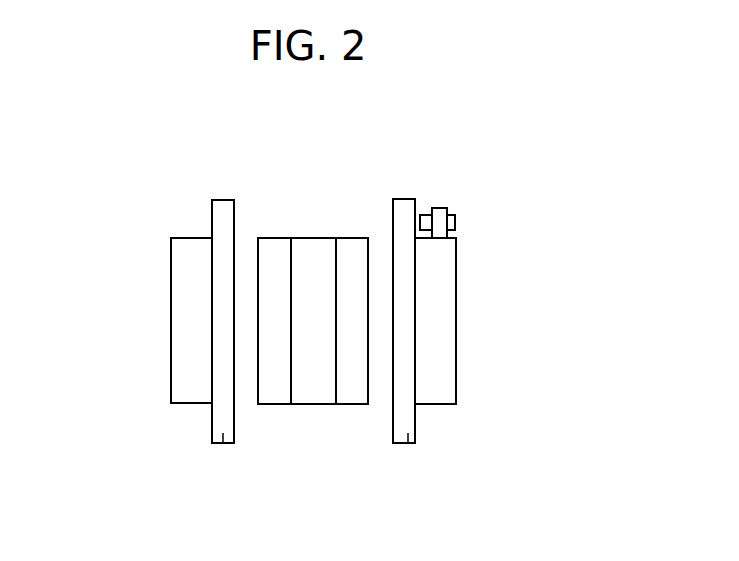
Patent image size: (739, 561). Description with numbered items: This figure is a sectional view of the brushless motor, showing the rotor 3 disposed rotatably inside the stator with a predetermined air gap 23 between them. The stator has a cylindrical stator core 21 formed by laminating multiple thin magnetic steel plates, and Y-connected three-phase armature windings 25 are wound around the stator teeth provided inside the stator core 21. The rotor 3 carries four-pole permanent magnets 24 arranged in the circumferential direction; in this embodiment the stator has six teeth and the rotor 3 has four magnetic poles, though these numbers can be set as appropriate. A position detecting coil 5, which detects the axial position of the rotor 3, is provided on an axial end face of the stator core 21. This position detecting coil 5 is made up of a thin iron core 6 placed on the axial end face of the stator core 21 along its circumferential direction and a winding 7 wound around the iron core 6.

The rotor 3 is at (332, 423).
The position detecting coil 5 is at (515, 183).
The iron core 6 is at (437, 208).
The winding 7 is at (455, 221).
The stator core 21 is at (171, 330).
The air gap 23 is at (249, 228).
The permanent magnets 24 is at (276, 400).
The armature windings 25 is at (223, 433).